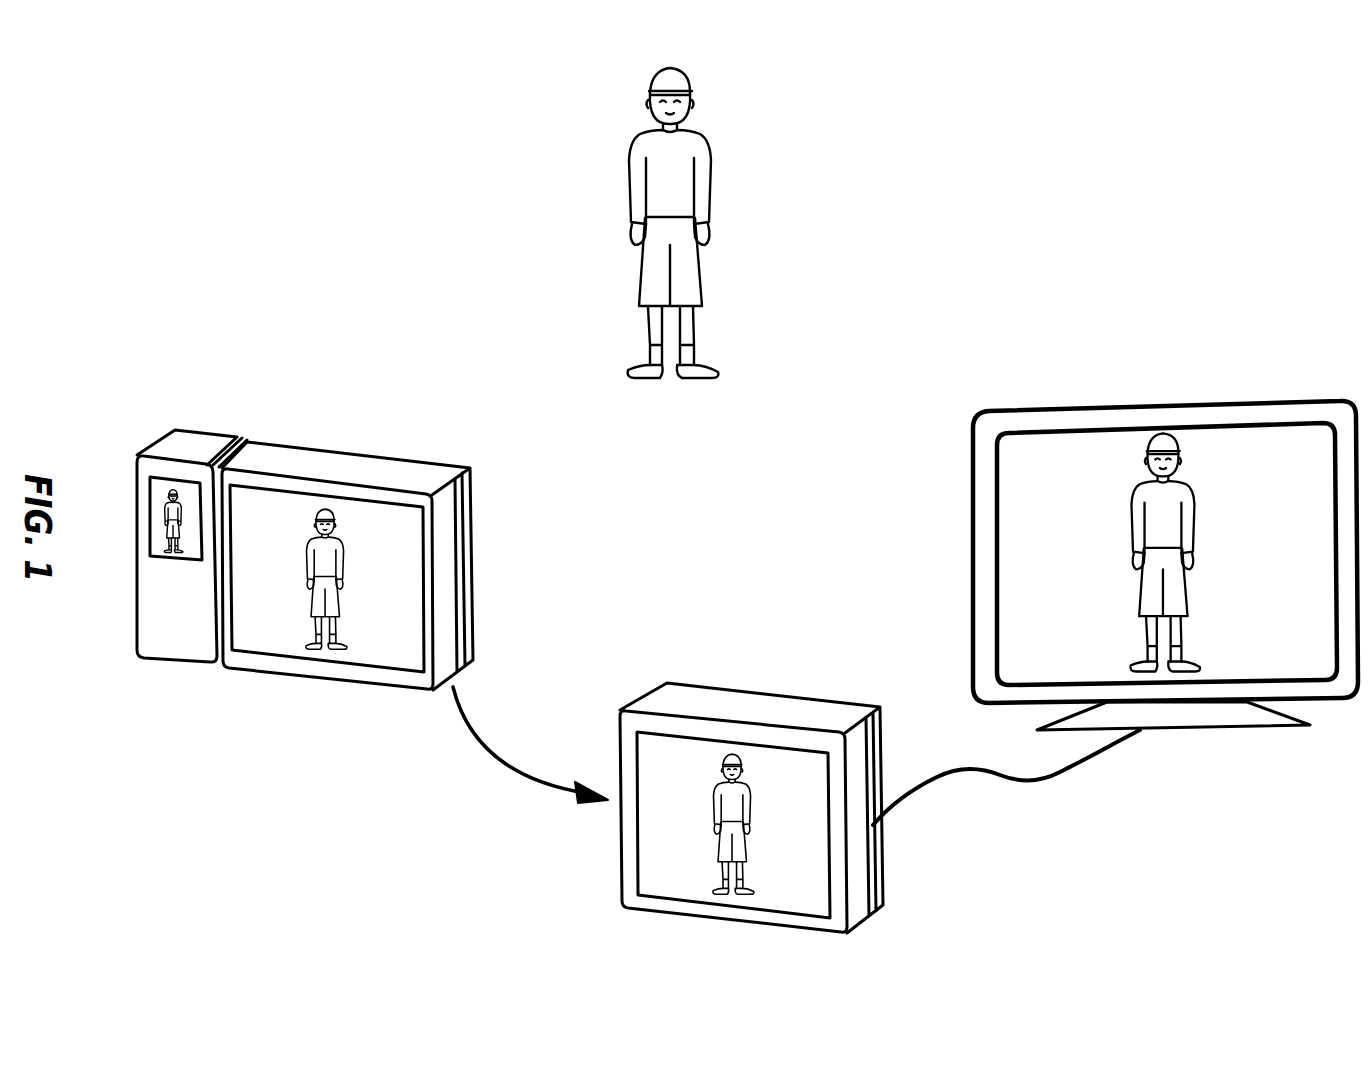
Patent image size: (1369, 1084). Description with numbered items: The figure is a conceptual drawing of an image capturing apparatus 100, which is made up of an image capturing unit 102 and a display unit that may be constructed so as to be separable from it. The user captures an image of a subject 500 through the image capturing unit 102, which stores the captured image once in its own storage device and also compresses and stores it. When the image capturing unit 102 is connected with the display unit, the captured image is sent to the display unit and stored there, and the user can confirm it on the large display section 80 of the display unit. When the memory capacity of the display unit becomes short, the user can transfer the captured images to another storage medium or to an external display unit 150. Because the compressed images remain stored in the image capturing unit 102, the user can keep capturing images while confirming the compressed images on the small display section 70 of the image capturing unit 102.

The subject 500 is at (722, 155).
The image capturing apparatus 100 is at (311, 525).
The image capturing unit 102 is at (167, 500).
The small display section 70 is at (149, 520).
The large display section 80 is at (367, 653).
The external display unit 150 is at (1273, 407).